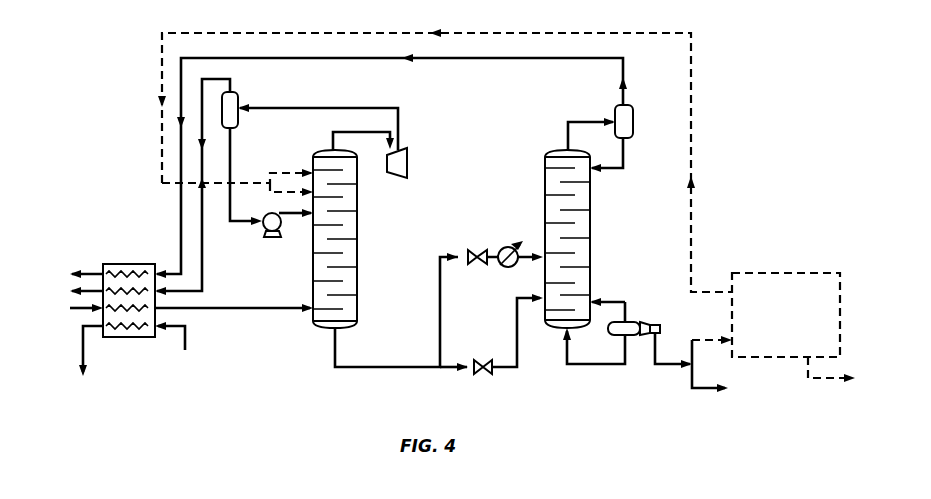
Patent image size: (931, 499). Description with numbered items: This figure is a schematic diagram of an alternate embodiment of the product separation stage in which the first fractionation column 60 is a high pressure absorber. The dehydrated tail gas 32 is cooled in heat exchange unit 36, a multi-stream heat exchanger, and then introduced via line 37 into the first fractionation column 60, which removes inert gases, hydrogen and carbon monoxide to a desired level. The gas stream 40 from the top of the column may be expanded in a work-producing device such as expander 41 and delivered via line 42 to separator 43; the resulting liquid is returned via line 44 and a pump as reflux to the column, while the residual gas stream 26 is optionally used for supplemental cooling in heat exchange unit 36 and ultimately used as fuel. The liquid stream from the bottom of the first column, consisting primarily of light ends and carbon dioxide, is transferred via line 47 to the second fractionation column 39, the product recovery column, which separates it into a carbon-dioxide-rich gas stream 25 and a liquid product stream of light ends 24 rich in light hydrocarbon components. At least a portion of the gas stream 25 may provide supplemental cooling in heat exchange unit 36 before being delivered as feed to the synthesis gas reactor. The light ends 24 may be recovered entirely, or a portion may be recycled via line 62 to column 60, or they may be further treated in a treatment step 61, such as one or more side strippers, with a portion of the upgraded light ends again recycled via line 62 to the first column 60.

The recycle line 62 is at (478, 33).
The CO2-rich gas stream 25 is at (515, 58).
The residual gas stream 26 is at (204, 257).
The separator 43 is at (238, 97).
The line 42 is at (328, 106).
The line 44 is at (232, 159).
The gas stream 40 is at (336, 137).
The expander 41 is at (396, 177).
The first fractionation column 60 is at (358, 224).
The line 47 is at (517, 328).
The second fractionation column 39 is at (591, 224).
The heat exchange unit 36 is at (122, 337).
The line 37 is at (265, 308).
The dehydrated tail gas 32 is at (70, 316).
The treatment step 61 is at (776, 273).
The light ends 24 is at (702, 392).